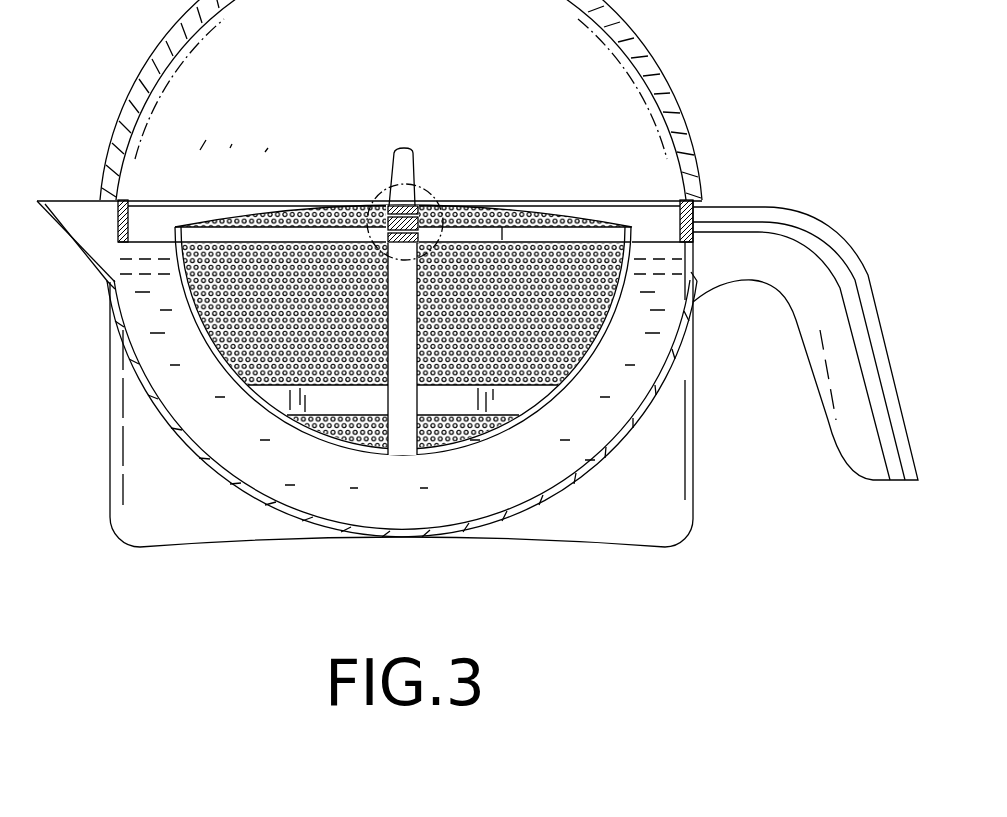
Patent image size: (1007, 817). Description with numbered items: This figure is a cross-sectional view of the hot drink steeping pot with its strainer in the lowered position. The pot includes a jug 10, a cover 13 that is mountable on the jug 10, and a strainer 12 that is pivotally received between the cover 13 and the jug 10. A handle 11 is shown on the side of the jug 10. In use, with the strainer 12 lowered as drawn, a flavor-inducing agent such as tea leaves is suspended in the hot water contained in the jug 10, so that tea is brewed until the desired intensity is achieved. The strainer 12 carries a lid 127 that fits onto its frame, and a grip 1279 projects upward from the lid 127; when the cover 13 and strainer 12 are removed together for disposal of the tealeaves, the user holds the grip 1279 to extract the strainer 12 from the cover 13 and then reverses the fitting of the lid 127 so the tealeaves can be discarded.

The jug 10 is at (686, 399).
The handle 11 is at (867, 277).
The strainer 12 is at (587, 358).
The cover 13 is at (122, 105).
The lid 127 is at (568, 218).
The grip 1279 is at (408, 148).